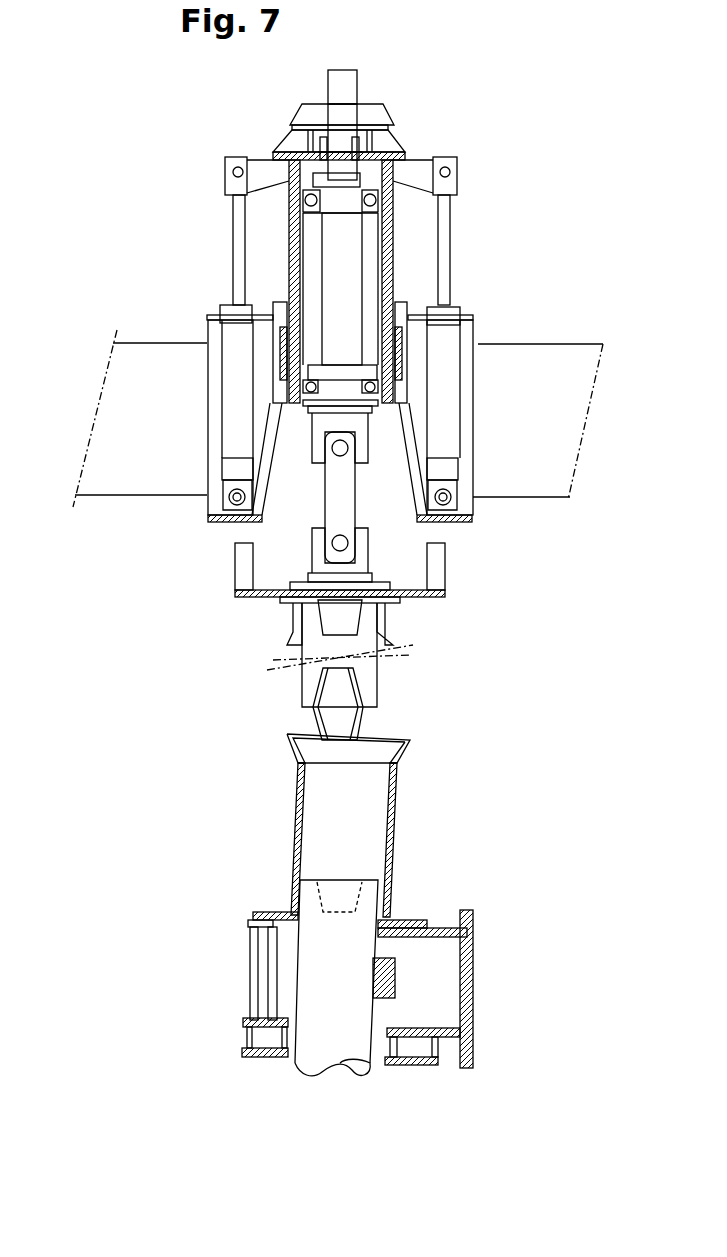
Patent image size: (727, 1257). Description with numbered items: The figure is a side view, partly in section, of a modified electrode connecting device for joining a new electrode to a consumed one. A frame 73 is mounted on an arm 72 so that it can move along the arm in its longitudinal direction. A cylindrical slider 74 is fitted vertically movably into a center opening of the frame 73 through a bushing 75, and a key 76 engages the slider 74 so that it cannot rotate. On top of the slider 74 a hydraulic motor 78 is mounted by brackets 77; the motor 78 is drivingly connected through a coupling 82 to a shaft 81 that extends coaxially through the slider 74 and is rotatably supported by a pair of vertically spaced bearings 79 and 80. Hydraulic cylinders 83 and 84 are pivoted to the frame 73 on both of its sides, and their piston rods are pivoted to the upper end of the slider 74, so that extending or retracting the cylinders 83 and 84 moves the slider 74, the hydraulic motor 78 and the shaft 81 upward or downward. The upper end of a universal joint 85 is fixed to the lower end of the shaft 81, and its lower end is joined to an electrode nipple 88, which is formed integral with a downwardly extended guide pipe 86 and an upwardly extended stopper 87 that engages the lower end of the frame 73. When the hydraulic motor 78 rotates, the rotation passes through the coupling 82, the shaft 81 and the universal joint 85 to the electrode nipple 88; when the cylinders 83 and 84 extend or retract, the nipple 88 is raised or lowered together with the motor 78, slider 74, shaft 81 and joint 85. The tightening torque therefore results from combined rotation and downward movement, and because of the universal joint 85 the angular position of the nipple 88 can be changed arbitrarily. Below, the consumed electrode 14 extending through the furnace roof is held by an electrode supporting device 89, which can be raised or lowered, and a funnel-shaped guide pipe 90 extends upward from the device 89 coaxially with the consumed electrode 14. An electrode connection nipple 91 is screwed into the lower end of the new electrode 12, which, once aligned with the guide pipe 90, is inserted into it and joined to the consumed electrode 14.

The new electrode 12 is at (377, 683).
The consumed electrode 14 is at (293, 1065).
The arm 72 is at (538, 357).
The frame 73 is at (267, 472).
The cylindrical slider 74 is at (295, 270).
The bushing 75 is at (387, 407).
The key 76 is at (280, 347).
The brackets 77 is at (400, 143).
The hydraulic motor 78 is at (372, 106).
The bearing 79 is at (305, 203).
The bearing 80 is at (287, 405).
The shaft 81 is at (340, 240).
The coupling 82 is at (292, 134).
The hydraulic cylinder 83 is at (230, 308).
The hydraulic cylinder 84 is at (453, 308).
The universal joint 85 is at (360, 505).
The guide pipe 86 is at (383, 633).
The stopper 87 is at (237, 545).
The electrode nipple 88 is at (320, 612).
The electrode supporting device 89 is at (247, 952).
The funnel-shaped guide pipe 90 is at (395, 810).
The electrode connection nipple 91 is at (363, 718).